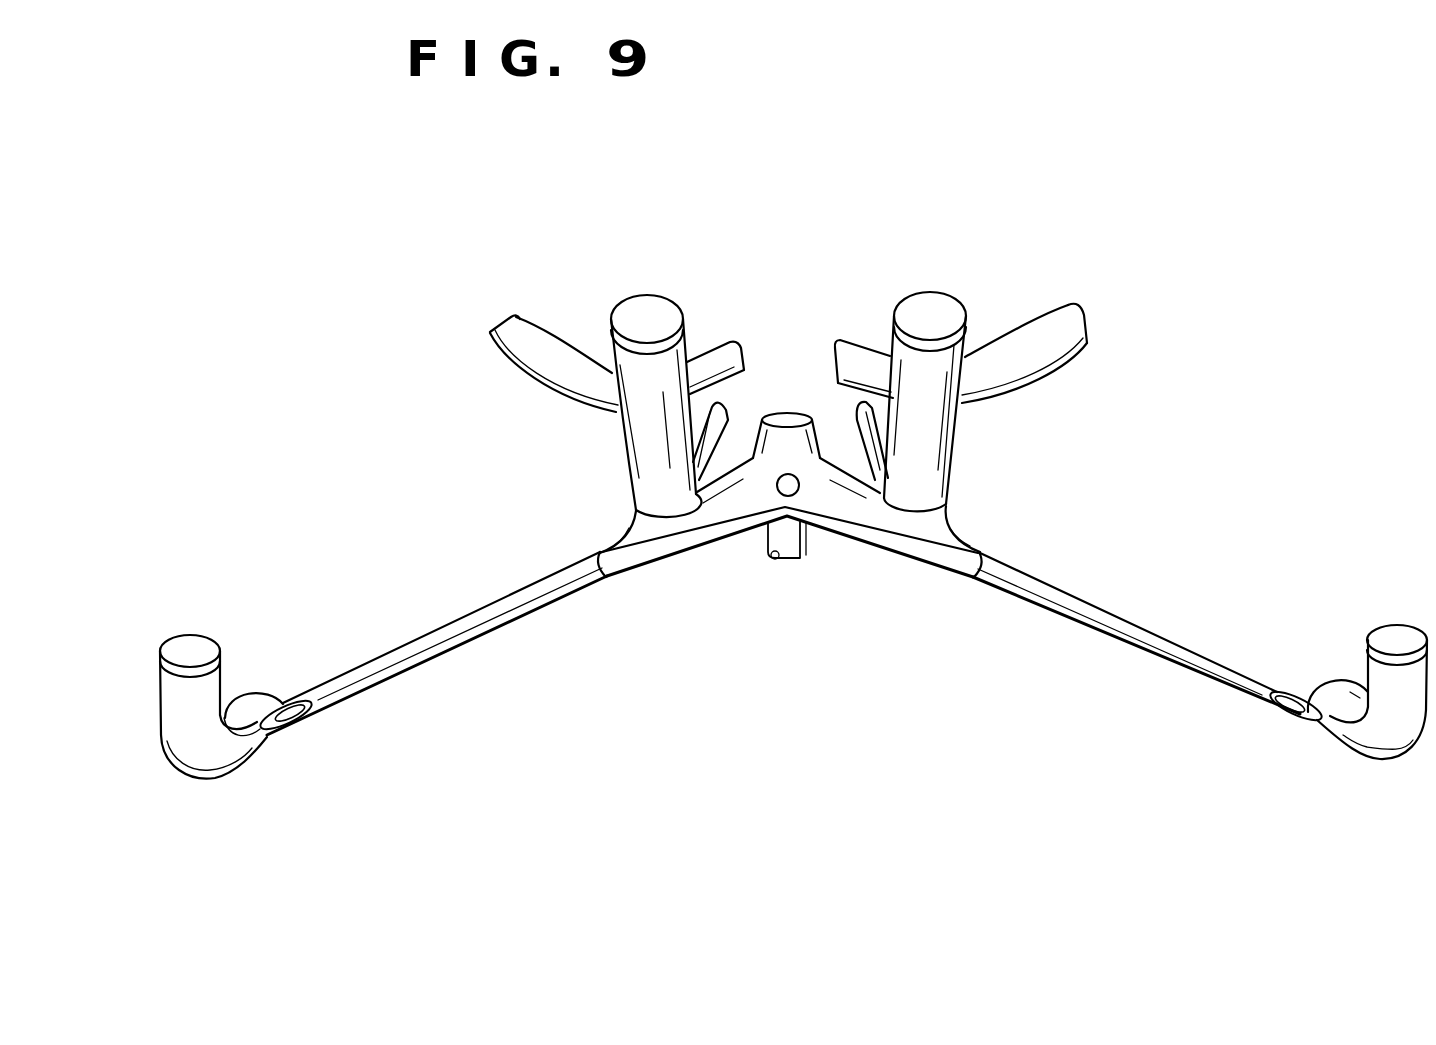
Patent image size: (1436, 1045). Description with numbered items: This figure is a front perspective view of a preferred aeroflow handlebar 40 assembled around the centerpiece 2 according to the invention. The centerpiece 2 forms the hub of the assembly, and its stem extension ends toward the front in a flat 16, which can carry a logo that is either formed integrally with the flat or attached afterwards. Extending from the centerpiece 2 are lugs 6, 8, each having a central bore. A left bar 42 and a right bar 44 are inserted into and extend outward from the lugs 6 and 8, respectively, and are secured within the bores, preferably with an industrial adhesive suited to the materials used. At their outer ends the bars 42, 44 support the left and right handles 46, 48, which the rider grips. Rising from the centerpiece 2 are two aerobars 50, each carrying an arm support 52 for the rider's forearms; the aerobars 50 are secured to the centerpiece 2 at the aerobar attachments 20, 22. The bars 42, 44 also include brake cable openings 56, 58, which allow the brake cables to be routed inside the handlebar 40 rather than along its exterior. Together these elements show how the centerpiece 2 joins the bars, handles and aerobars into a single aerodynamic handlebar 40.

The aeroflow handlebar 40 is at (1158, 500).
The aerobars 50 is at (682, 313).
The arm supports 52 is at (838, 360).
The centerpiece 2 is at (830, 517).
The flat 16 is at (784, 494).
The aerobar attachment 22 is at (632, 522).
The aerobar attachment 20 is at (950, 522).
The lug 8 is at (658, 548).
The lug 6 is at (877, 527).
The right bar 44 is at (417, 668).
The left bar 42 is at (1177, 637).
The brake cable opening 58 is at (296, 703).
The brake cable opening 56 is at (1286, 713).
The right handle 48 is at (210, 777).
The left handle 46 is at (1372, 758).